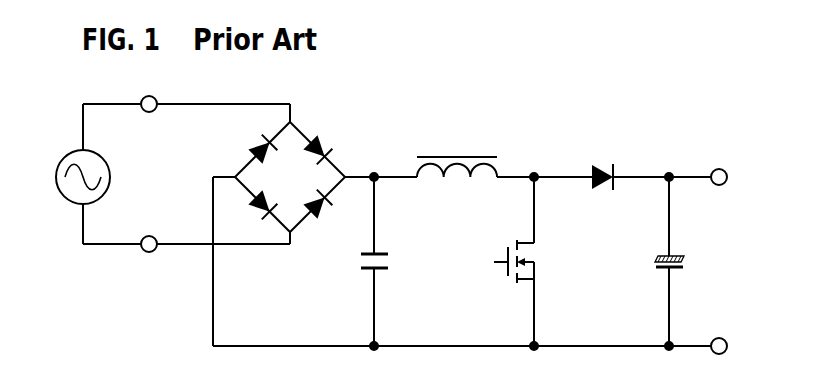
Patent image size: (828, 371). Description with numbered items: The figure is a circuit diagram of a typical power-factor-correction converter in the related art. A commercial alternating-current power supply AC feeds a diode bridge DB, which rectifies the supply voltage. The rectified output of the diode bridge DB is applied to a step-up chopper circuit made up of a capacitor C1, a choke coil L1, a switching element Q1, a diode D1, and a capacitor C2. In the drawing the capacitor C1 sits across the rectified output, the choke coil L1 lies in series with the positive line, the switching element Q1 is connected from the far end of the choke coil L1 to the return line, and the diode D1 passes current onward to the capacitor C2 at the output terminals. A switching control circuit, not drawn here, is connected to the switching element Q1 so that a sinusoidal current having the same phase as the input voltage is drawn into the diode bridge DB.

The commercial alternating-current power supply AC is at (66, 174).
The diode bridge DB is at (290, 162).
The choke coil L1 is at (457, 151).
The capacitor C1 is at (390, 261).
The switching element Q1 is at (530, 261).
The diode D1 is at (599, 165).
The capacitor C2 is at (685, 261).